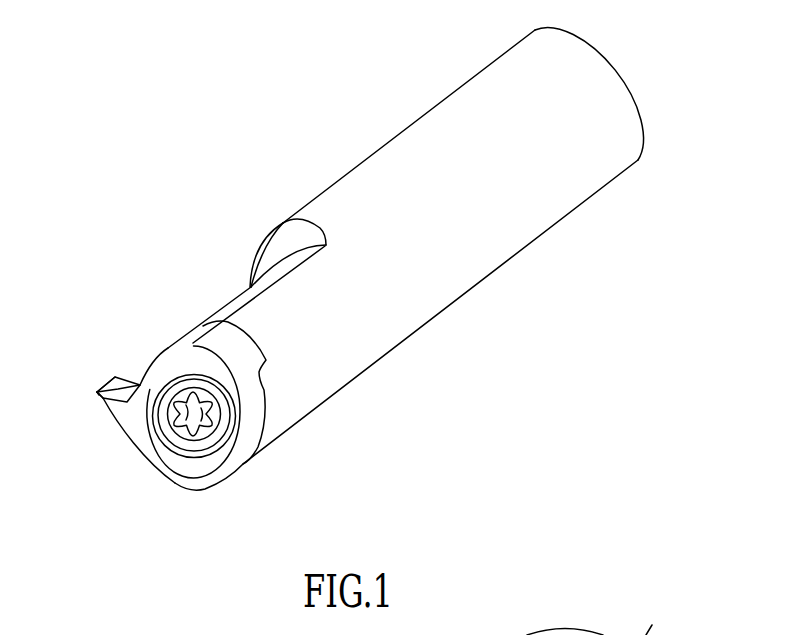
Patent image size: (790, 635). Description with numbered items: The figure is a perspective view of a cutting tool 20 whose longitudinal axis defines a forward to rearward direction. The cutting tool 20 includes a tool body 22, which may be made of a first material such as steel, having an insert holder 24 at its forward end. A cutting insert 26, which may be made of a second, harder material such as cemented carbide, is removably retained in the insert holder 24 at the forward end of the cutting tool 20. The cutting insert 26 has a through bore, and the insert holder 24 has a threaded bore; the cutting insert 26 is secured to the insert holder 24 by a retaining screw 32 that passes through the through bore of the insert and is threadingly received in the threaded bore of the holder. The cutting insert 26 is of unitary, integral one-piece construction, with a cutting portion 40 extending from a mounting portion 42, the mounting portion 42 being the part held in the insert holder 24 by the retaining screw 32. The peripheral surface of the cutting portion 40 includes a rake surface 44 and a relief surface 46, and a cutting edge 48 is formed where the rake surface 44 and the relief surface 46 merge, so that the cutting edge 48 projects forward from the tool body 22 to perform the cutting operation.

The cutting tool 20 is at (340, 274).
The tool body 22 is at (522, 287).
The insert holder 24 is at (207, 260).
The cutting insert 26 is at (145, 327).
The retaining screw 32 is at (210, 448).
The cutting portion 40 is at (88, 402).
The mounting portion 42 is at (195, 468).
The rake surface 44 is at (97, 396).
The relief surface 46 is at (97, 407).
The cutting edge 48 is at (106, 383).